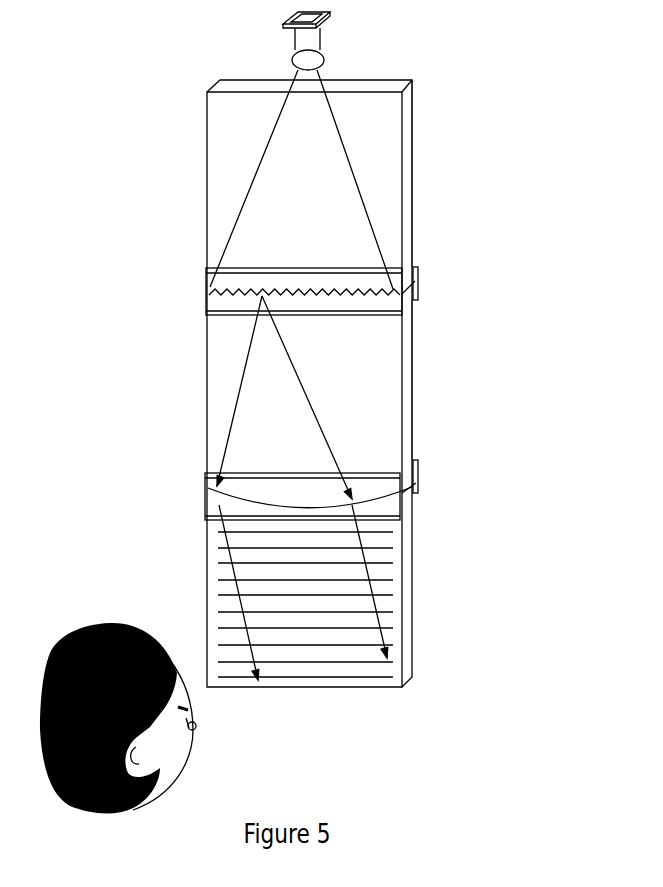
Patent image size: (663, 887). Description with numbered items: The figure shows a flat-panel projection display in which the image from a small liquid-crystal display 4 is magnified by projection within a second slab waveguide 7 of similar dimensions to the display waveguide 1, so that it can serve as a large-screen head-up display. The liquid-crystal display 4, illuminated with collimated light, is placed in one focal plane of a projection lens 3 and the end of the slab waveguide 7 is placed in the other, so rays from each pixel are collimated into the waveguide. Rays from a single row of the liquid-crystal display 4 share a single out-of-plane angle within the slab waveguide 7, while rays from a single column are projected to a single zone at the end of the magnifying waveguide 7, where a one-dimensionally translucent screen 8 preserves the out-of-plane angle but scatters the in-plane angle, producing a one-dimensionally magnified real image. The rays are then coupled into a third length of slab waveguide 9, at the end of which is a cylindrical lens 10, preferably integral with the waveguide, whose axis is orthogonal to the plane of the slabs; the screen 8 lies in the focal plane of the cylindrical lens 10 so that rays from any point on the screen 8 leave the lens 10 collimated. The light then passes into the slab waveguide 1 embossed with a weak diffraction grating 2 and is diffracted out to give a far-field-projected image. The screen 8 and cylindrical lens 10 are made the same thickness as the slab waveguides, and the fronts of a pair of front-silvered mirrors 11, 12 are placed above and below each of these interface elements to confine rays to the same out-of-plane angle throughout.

The slab waveguide 1 is at (417, 610).
The weak diffraction grating 2 is at (360, 665).
The lens 3 is at (292, 65).
The liquid-crystal display 4 is at (285, 32).
The second slab waveguide 7 is at (413, 138).
The one-dimensionally translucent screen 8 is at (250, 296).
The third length of slab waveguide 9 is at (407, 373).
The cylindrical lens 10 is at (243, 489).
The front-silvered mirror 11 is at (407, 307).
The front-silvered mirror 12 is at (418, 288).